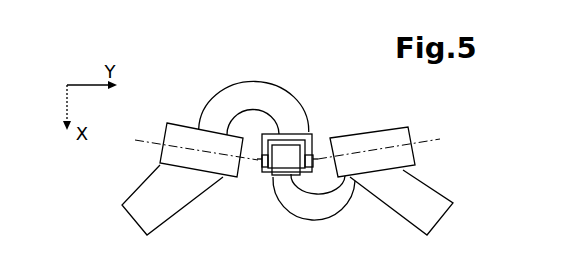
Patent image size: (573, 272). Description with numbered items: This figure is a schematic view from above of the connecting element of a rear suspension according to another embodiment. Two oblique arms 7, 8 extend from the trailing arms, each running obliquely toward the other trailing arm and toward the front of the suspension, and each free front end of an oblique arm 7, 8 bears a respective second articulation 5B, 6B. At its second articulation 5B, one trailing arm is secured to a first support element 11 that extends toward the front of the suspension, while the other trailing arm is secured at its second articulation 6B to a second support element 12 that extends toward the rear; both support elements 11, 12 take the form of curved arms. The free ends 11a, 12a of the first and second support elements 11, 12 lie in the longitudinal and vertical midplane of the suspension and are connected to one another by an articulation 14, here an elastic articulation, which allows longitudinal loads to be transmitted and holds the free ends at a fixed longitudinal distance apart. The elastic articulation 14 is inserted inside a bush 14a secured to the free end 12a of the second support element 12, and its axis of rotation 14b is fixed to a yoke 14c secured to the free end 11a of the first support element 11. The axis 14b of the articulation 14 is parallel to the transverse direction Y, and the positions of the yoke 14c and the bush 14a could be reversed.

The second articulation 5B is at (173, 130).
The second articulation 6B is at (398, 130).
The oblique arm 7 is at (143, 194).
The oblique arm 8 is at (434, 190).
The first support element 11 is at (220, 98).
The free end of first support element 11a is at (253, 115).
The second support element 12 is at (345, 211).
The free end of second support element 12a is at (270, 180).
The articulation 14 is at (326, 112).
The bush 14a is at (288, 167).
The axis of rotation 14b is at (257, 160).
The yoke 14c is at (311, 133).